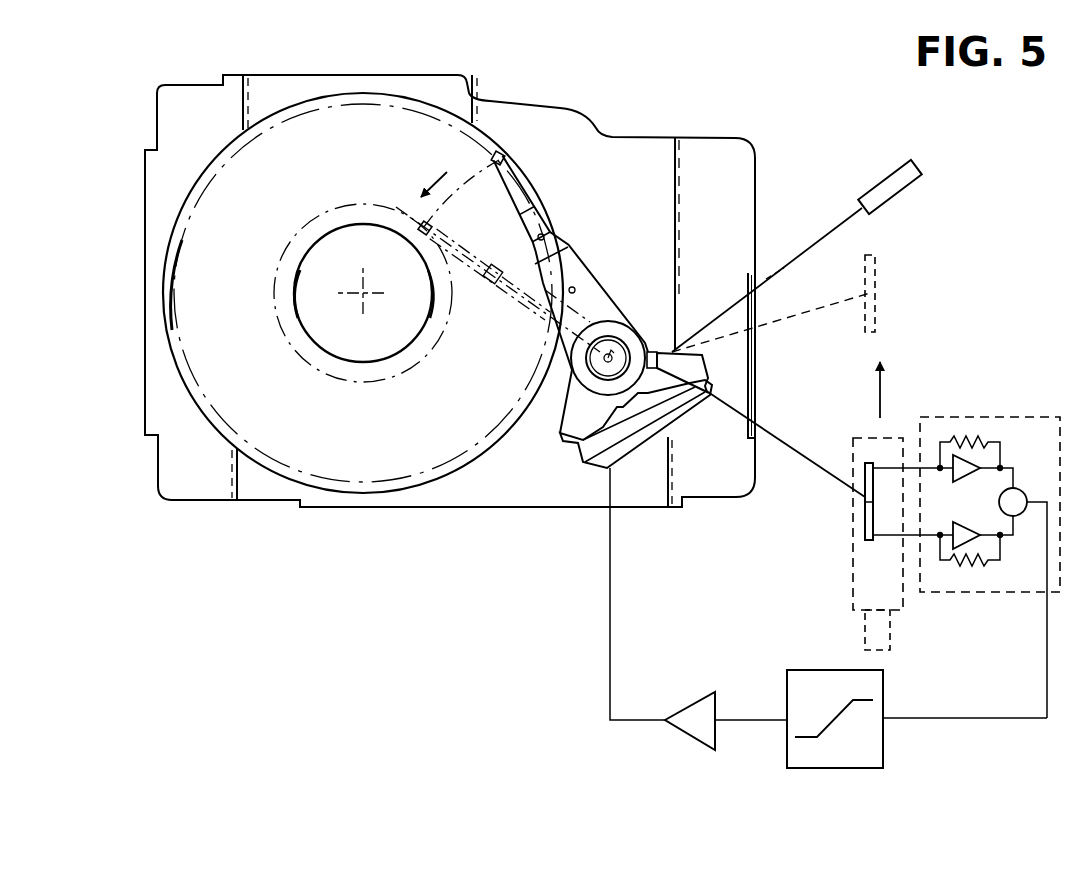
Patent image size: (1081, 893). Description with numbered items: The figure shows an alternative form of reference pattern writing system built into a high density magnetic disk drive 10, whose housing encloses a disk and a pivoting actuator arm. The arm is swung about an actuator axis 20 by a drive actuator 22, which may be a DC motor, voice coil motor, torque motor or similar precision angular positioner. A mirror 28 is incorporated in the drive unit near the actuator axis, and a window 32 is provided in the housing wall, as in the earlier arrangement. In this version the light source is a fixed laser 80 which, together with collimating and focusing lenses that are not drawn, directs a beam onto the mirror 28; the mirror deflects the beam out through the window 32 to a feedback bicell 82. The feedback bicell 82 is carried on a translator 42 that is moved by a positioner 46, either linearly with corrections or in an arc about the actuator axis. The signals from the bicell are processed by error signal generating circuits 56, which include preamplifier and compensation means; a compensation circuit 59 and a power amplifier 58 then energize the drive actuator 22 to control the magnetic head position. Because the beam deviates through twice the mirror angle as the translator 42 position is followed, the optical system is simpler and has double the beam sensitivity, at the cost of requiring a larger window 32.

The magnetic disk drive 10 is at (670, 92).
The actuator axis 20 is at (612, 355).
The drive actuator 22 is at (595, 468).
The mirror 28 is at (660, 348).
The window 32 is at (750, 275).
The fixed laser 80 is at (920, 190).
The feedback bicell 82 is at (863, 497).
The translator 42 is at (852, 578).
The positioner 46 is at (890, 630).
The error signal generating circuits 56 is at (982, 413).
The power amplifier 58 is at (692, 740).
The compensation circuit 59 is at (883, 745).